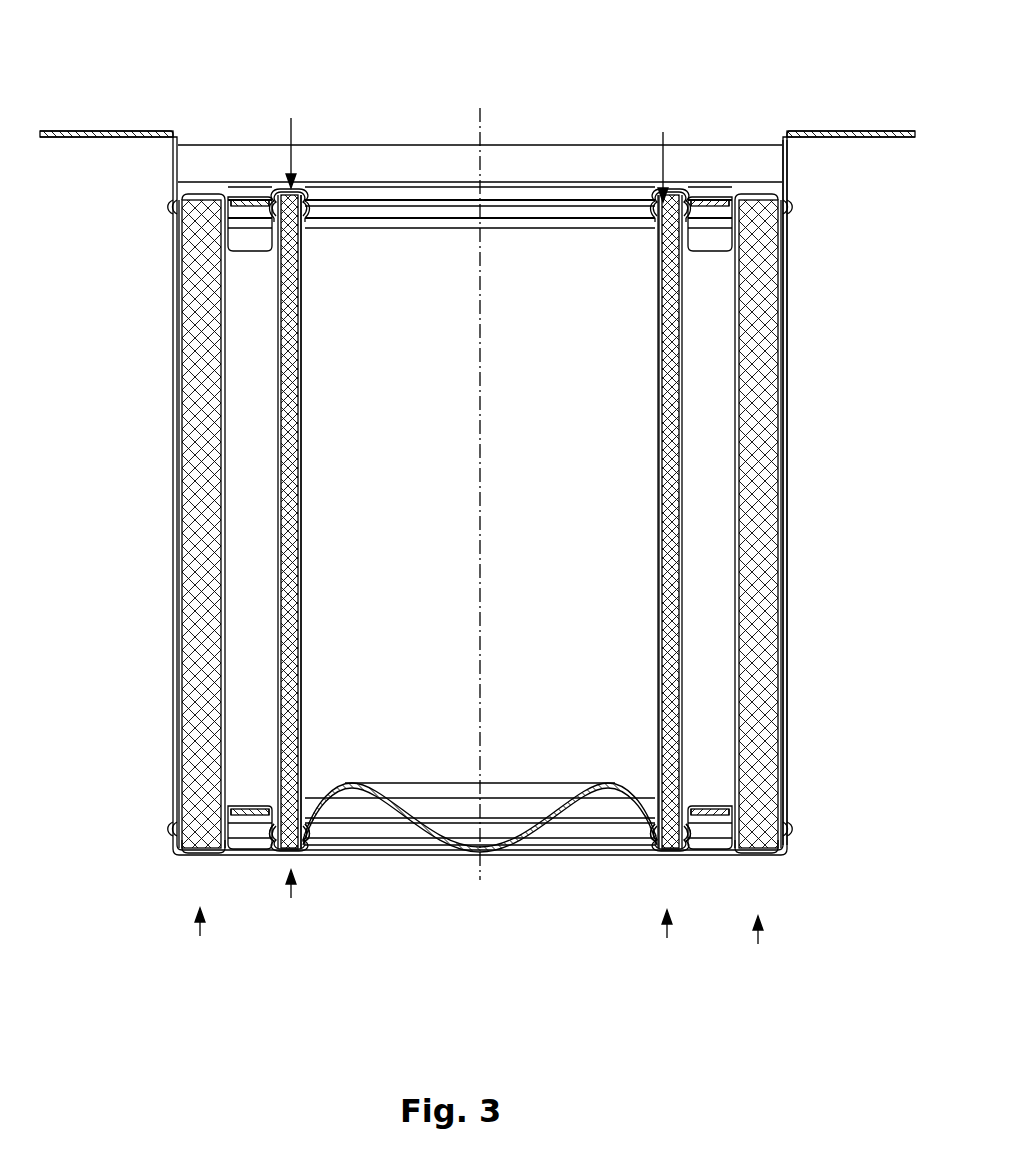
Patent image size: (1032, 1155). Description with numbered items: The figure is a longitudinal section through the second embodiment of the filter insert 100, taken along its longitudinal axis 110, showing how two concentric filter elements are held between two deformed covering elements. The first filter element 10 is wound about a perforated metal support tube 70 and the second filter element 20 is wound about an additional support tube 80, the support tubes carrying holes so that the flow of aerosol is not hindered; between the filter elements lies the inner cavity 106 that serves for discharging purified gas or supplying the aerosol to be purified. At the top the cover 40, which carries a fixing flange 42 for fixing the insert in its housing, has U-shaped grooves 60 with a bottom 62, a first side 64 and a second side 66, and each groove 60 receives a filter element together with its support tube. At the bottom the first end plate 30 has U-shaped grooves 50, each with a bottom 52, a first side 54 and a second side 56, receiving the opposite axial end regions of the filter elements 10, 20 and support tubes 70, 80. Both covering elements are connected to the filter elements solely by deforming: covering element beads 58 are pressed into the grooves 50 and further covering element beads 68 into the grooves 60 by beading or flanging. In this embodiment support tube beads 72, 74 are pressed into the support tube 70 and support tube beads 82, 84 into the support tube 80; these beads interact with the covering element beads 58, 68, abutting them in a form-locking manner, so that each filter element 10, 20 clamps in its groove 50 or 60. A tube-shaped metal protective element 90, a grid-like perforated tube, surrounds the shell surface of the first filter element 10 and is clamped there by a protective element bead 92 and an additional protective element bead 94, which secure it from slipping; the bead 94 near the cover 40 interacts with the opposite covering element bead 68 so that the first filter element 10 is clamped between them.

The filter insert 100 is at (226, 68).
The fixing flange 42 is at (477, 460).
The cover 40 is at (457, 170).
The first end plate 30 is at (466, 835).
The first filter element 10 is at (212, 550).
The second filter element 20 is at (284, 500).
The U-shaped groove 50 is at (479, 918).
The bottom of the U-shaped groove 52 is at (206, 855).
The first side of the U-shaped groove 54 is at (178, 840).
The second side of the U-shaped groove 56 is at (238, 850).
The covering element bead 58 is at (236, 810).
The U-shaped groove of the cover 60 is at (474, 147).
The bottom of the U-shaped groove of the cover 62 is at (292, 192).
The first side of the U-shaped groove of the cover 64 is at (309, 199).
The second side of the U-shaped groove of the cover 66 is at (284, 194).
The further covering element bead 68 is at (248, 290).
The support tube 70 is at (228, 582).
The support tube bead 72 is at (222, 830).
The additional support tube bead 74 is at (200, 214).
The additional support tube 80 is at (302, 472).
The support tube bead of the additional support tube 82 is at (298, 802).
The additional support tube bead of the additional support tube 84 is at (304, 222).
The tube-shaped metal protective element 90 is at (787, 400).
The protective element bead 92 is at (172, 822).
The additional protective element bead 94 is at (171, 206).
The inner cavity 106 is at (452, 474).
The longitudinal axis 110 is at (482, 386).